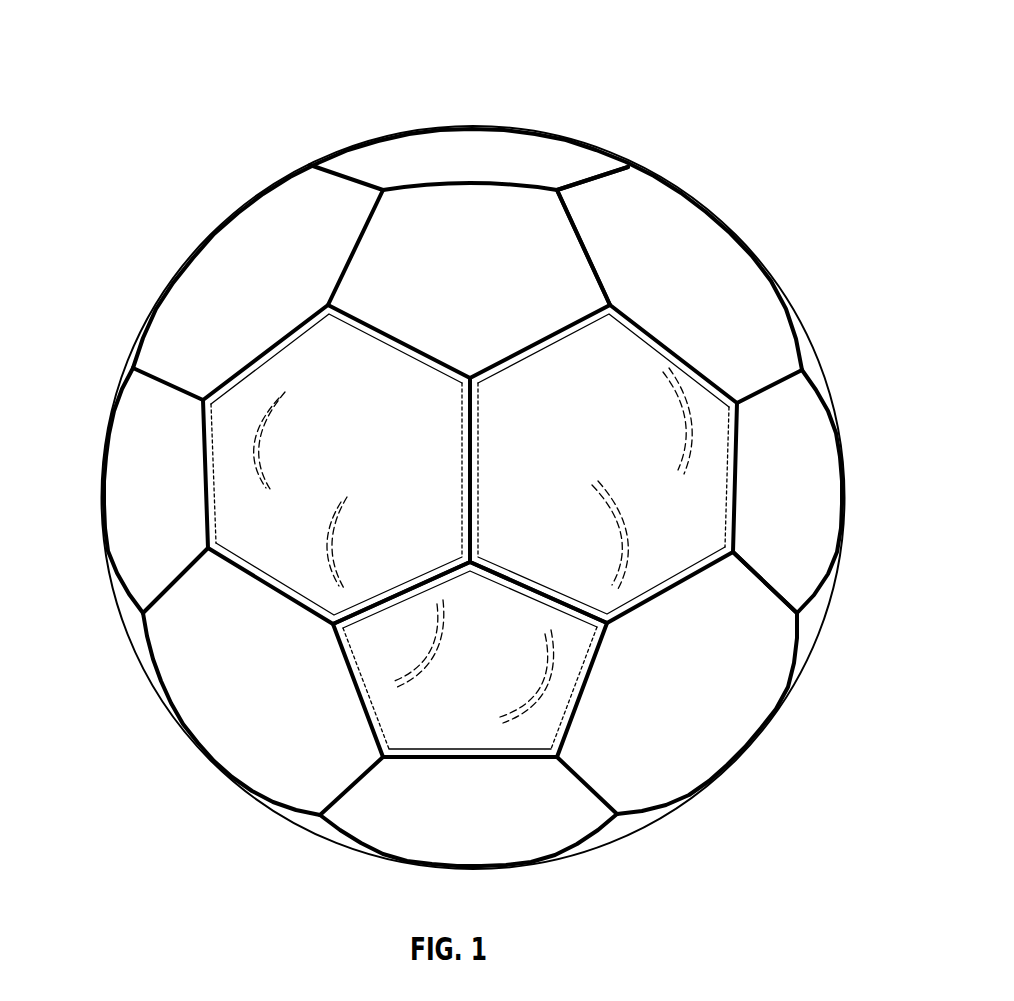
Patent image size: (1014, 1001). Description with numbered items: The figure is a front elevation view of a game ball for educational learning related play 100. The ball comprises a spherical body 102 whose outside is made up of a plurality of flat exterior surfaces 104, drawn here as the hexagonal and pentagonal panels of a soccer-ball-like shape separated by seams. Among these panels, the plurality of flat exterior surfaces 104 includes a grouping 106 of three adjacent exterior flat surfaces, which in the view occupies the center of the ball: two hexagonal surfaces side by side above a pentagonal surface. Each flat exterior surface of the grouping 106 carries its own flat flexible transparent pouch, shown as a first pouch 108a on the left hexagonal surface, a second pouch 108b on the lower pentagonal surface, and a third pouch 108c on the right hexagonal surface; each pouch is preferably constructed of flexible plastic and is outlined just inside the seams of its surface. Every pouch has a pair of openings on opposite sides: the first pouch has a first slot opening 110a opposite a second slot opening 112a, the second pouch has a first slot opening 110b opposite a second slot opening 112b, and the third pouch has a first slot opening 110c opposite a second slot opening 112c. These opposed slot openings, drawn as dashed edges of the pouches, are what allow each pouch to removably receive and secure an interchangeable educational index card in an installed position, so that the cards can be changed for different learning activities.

The game ball for educational learning related play 100 is at (158, 48).
The spherical body 102 is at (706, 206).
The flat exterior surface 104 is at (738, 282).
The grouping of three adjacent exterior flat surfaces 106 is at (512, 498).
The flat flexible transparent pouch 108a is at (257, 367).
The flat flexible transparent pouch 108b is at (470, 739).
The flat flexible transparent pouch 108c is at (672, 498).
The first slot opening 110a is at (212, 473).
The first slot opening 110b is at (246, 698).
The first slot opening 110c is at (703, 481).
The second slot opening 112a is at (457, 437).
The second slot opening 112b is at (665, 723).
The second slot opening 112c is at (827, 477).